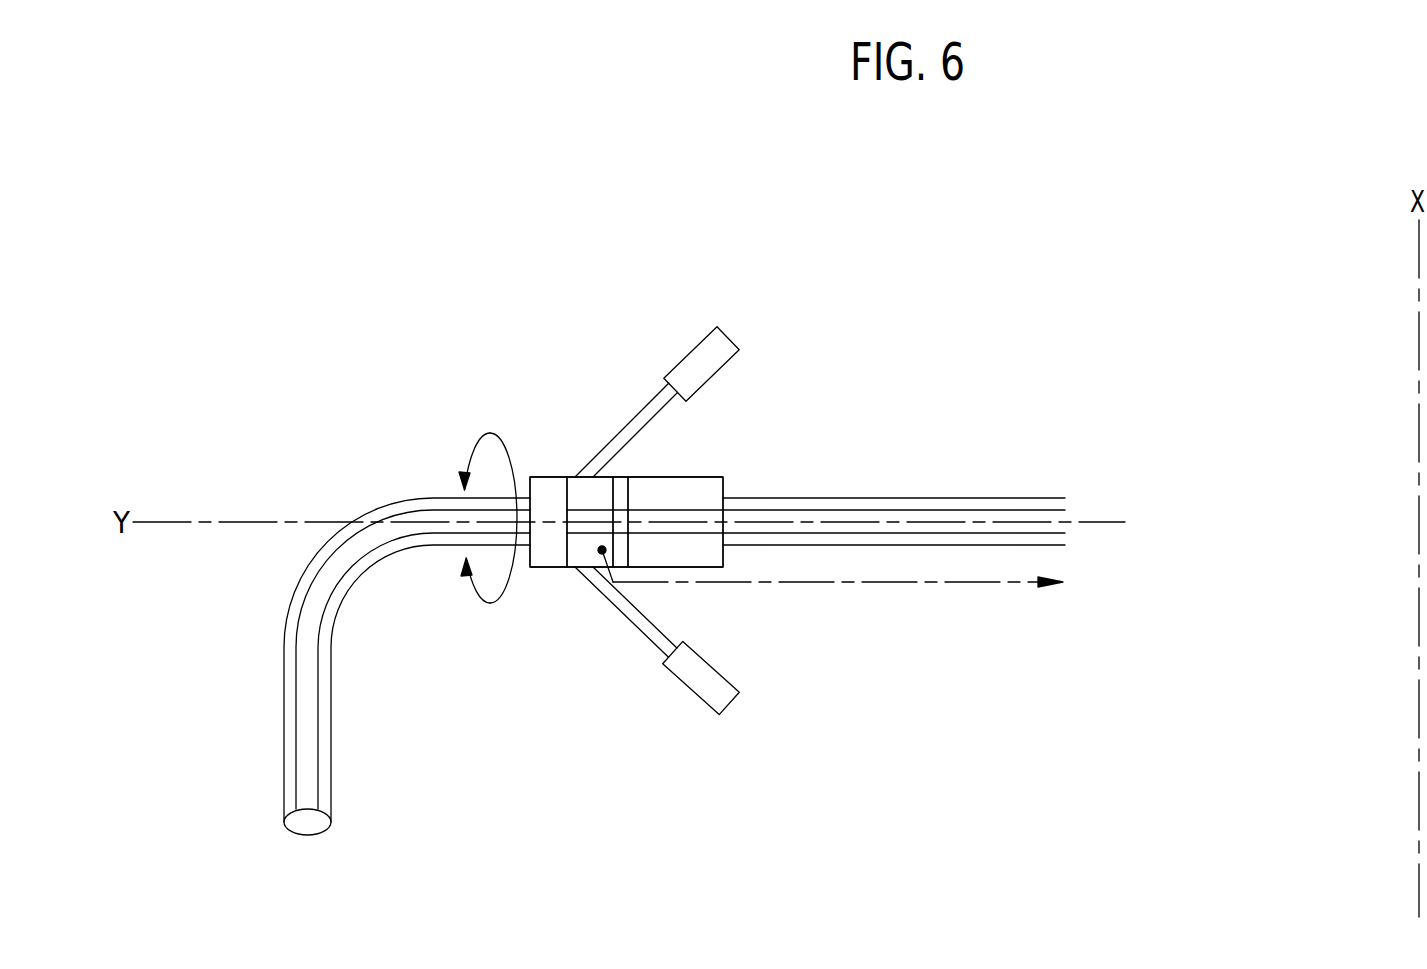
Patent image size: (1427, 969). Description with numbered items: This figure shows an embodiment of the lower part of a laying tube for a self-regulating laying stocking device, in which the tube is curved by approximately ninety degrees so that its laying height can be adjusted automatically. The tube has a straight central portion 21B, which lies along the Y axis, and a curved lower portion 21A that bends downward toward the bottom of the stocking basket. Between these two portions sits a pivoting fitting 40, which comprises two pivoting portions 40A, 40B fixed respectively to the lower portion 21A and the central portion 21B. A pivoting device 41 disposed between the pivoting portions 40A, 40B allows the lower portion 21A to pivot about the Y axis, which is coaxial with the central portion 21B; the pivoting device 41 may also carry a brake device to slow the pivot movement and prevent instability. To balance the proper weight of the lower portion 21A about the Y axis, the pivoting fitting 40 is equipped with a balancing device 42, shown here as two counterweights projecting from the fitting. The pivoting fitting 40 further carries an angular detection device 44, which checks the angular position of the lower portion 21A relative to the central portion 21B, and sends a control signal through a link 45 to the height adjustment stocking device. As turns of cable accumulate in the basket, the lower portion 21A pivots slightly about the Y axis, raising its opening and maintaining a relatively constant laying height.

The lower portion 21A is at (298, 735).
The central portion 21B is at (973, 505).
The pivoting fitting 40 is at (552, 396).
The pivoting portion 40A is at (552, 555).
The pivoting portion 40B is at (697, 490).
The pivoting device 41 is at (620, 490).
The balancing device 42 is at (708, 352).
The angular detection device 44 is at (585, 490).
The link 45 is at (822, 583).